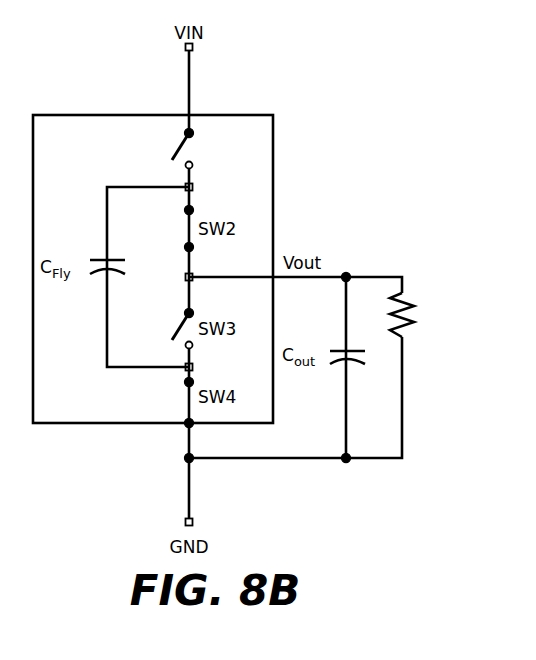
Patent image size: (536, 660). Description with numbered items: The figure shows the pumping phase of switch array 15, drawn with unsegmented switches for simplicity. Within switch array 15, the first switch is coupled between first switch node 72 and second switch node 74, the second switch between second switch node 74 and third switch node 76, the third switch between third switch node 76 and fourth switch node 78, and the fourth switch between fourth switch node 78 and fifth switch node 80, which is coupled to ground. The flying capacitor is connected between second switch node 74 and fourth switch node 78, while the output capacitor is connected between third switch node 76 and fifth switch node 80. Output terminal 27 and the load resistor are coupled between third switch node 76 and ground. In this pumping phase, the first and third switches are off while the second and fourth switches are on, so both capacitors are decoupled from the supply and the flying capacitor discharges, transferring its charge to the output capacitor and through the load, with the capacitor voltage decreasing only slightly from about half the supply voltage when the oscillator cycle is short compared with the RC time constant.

The switch array 15 is at (245, 115).
The first switch node 72 is at (185, 131).
The second switch node 74 is at (194, 187).
The third switch node 76 is at (185, 277).
The fourth switch node 78 is at (194, 367).
The fifth switch node 80 is at (186, 423).
The output terminal 27 is at (372, 277).